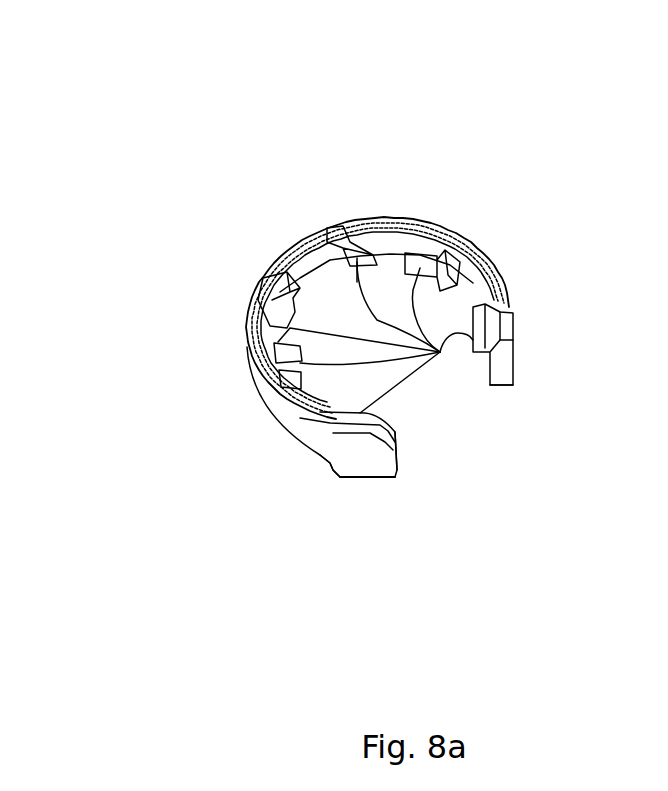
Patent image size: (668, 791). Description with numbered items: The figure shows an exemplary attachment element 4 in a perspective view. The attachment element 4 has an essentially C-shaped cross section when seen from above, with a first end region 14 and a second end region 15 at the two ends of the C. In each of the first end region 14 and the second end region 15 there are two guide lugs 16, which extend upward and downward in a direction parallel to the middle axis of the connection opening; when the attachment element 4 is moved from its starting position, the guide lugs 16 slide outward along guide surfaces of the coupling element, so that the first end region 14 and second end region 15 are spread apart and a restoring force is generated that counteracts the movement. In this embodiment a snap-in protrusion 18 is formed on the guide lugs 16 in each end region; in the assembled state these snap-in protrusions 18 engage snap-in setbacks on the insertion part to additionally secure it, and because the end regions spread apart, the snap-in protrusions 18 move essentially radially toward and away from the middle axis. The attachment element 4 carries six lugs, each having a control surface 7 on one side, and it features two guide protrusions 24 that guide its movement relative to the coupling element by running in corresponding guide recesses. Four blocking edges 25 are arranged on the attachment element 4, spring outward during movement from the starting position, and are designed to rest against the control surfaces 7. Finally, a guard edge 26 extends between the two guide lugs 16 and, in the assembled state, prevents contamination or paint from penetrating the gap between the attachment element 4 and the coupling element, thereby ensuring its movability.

The attachment element 4 is at (205, 241).
The control surface 7 is at (440, 352).
The first end region 14 is at (544, 297).
The second end region 15 is at (315, 499).
The guide lugs 16 is at (512, 387).
The snap-in protrusion 18 is at (513, 385).
The guide protrusions 24 is at (268, 278).
The blocking edges 25 is at (485, 268).
The guard edge 26 is at (363, 222).